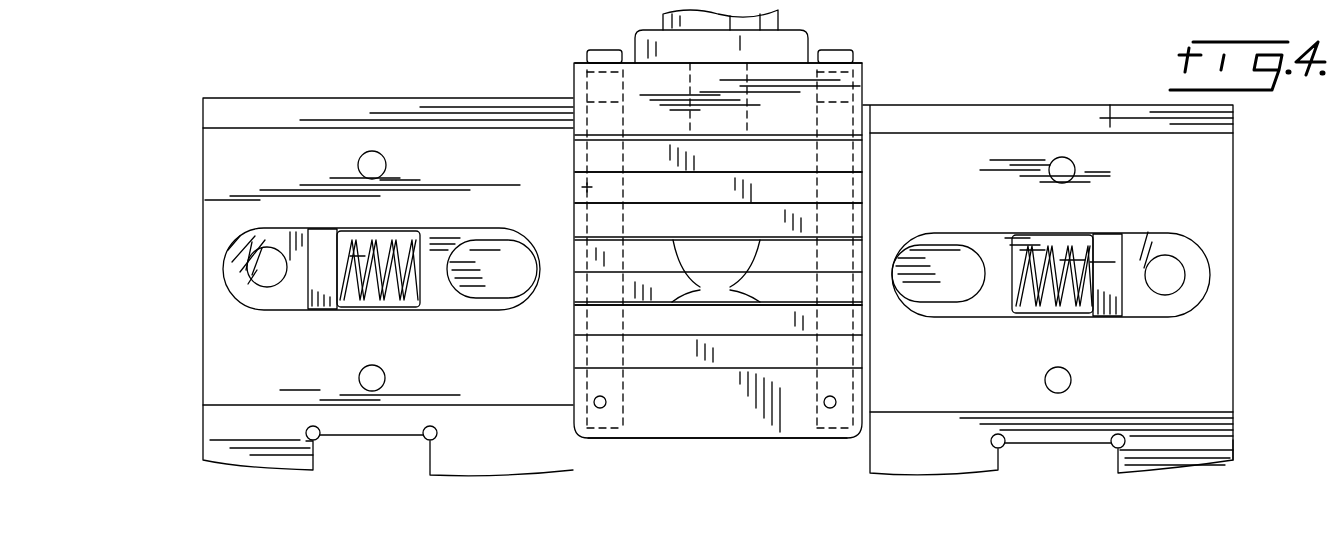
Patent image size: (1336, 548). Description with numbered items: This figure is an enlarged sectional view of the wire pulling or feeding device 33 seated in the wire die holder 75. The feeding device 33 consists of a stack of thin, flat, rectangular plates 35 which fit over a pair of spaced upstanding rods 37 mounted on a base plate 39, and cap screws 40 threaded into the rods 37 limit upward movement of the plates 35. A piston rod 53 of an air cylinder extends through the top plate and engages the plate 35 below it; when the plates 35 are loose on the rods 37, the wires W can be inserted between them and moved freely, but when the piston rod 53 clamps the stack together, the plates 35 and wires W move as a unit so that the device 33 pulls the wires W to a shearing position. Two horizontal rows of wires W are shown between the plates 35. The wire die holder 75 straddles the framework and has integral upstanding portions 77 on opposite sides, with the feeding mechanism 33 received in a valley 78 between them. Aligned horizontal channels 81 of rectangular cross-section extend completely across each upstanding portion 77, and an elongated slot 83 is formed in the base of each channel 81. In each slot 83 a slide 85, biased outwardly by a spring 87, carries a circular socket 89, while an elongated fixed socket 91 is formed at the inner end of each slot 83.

The wire pulling or feeding device 33 is at (566, 369).
The plates 35 is at (857, 165).
The upstanding rods 37 is at (862, 100).
The base plate 39 is at (707, 437).
The cap screws 40 is at (598, 50).
The piston rod 53 is at (742, 115).
The wire die holder 75 is at (1232, 456).
The upstanding portions 77 is at (212, 298).
The valley 78 is at (572, 318).
The channels 81 is at (220, 133).
The elongated slot 83 is at (370, 238).
The slide 85 is at (278, 236).
The spring 87 is at (392, 300).
The circular socket 89 is at (264, 282).
The elongated fixed socket 91 is at (466, 300).
The wires W is at (716, 271).